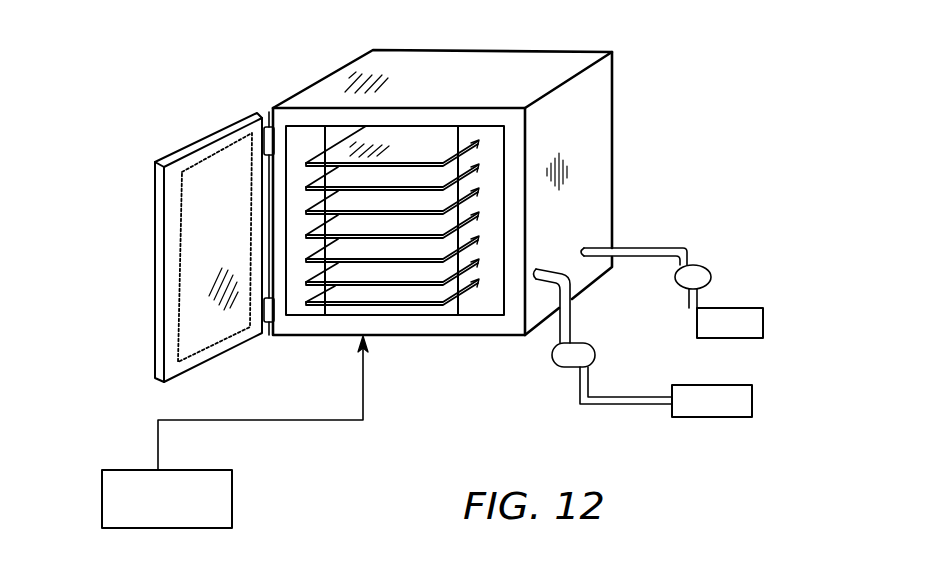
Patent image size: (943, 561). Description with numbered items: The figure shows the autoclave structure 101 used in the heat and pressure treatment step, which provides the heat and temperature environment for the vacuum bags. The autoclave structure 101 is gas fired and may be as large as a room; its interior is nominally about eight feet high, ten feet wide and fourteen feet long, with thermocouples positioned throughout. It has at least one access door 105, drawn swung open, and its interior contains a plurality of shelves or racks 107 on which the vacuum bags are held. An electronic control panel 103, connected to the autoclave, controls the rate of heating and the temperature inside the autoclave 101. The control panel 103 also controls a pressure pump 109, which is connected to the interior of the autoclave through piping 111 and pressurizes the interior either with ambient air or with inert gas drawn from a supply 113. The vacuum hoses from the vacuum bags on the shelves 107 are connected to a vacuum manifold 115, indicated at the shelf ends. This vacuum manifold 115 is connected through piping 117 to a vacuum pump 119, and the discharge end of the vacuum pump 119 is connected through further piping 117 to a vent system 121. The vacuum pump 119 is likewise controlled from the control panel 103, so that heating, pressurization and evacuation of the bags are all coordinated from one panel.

The autoclave structure 101 is at (613, 95).
The control panel 103 is at (232, 510).
The access door 105 is at (158, 163).
The shelves or racks 107 is at (407, 148).
The pressure pump 109 is at (710, 270).
The piping 111 is at (635, 252).
The supply 113 is at (743, 310).
The vacuum manifold 115 is at (503, 268).
The piping 117 is at (568, 324).
The vacuum pump 119 is at (595, 357).
The vent system 121 is at (752, 403).